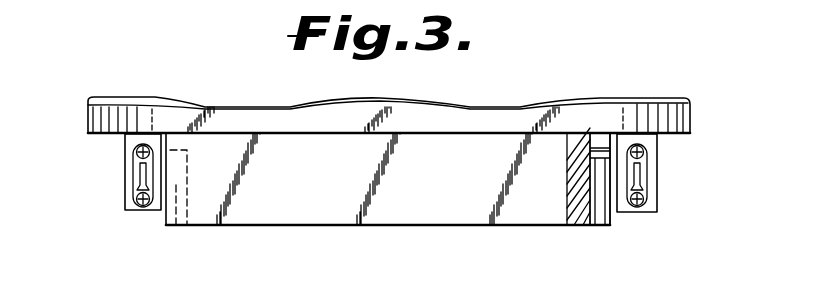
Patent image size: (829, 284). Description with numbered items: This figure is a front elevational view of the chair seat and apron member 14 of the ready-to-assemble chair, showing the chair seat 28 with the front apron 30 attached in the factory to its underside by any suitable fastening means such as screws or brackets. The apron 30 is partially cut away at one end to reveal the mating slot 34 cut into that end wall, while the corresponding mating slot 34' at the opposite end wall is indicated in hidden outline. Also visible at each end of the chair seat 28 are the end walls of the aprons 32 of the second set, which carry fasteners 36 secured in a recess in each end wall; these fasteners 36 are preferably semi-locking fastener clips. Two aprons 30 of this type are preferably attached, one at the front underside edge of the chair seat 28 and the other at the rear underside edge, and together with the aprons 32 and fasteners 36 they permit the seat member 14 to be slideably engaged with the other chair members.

The chair seat and apron member 14 is at (714, 63).
The chair seat 28 is at (193, 103).
The apron 30 is at (278, 203).
The apron 32 is at (126, 151).
The mating slot 34 is at (616, 205).
The mating slot 34' is at (148, 216).
The fasteners 36 is at (142, 177).